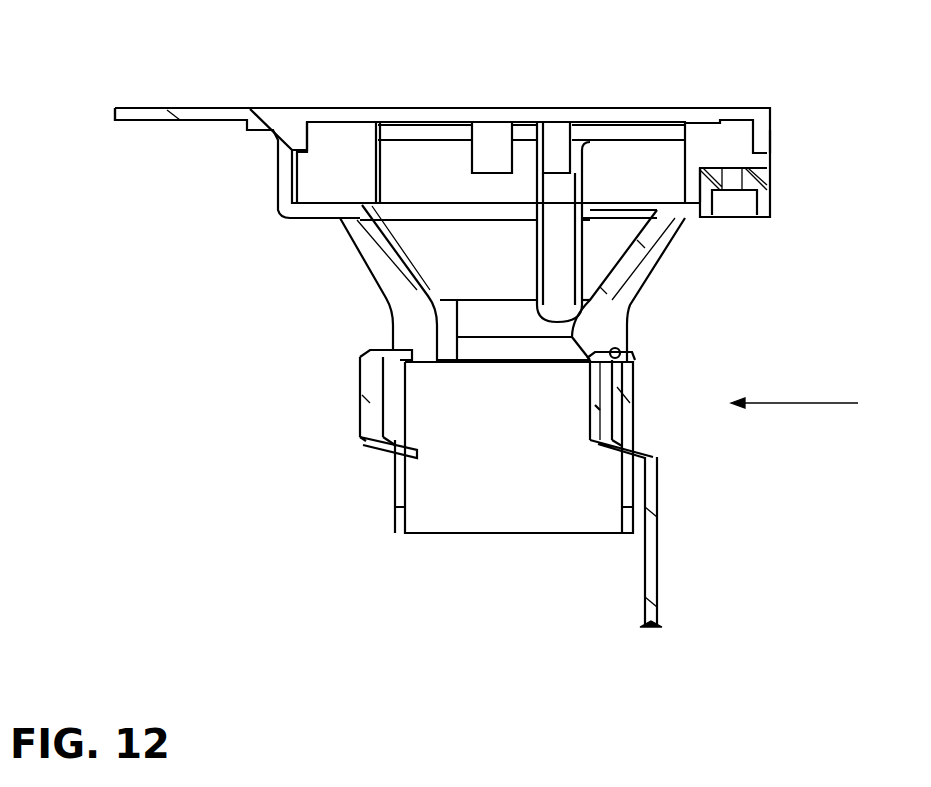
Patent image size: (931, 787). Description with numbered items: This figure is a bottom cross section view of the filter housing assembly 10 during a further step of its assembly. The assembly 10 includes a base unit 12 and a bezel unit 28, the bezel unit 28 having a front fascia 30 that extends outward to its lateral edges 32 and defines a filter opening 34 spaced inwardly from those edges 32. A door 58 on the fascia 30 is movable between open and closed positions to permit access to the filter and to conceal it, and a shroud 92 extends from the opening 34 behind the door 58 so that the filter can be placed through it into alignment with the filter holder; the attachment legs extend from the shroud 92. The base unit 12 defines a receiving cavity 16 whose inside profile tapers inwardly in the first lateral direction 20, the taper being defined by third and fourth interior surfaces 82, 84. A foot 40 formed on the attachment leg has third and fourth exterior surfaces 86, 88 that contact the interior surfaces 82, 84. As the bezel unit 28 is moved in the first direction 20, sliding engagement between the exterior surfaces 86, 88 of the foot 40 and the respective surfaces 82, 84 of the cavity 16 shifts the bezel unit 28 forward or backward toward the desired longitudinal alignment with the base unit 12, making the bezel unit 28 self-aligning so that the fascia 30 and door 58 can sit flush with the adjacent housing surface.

The filter housing assembly 10 is at (182, 358).
The base unit 12 is at (657, 570).
The first receiving cavity 16 is at (358, 445).
The first lateral direction 20 is at (792, 403).
The bezel unit 28 is at (742, 100).
The front fascia 30 is at (191, 107).
The first edge 32 is at (117, 110).
The filter opening 34 is at (416, 170).
The foot 40 is at (395, 387).
The door 58 is at (525, 108).
The third interior surface 82 is at (360, 383).
The fourth interior surface 84 is at (360, 420).
The third exterior surface 86 is at (387, 348).
The fourth exterior surface 88 is at (392, 452).
The shroud 92 is at (627, 265).